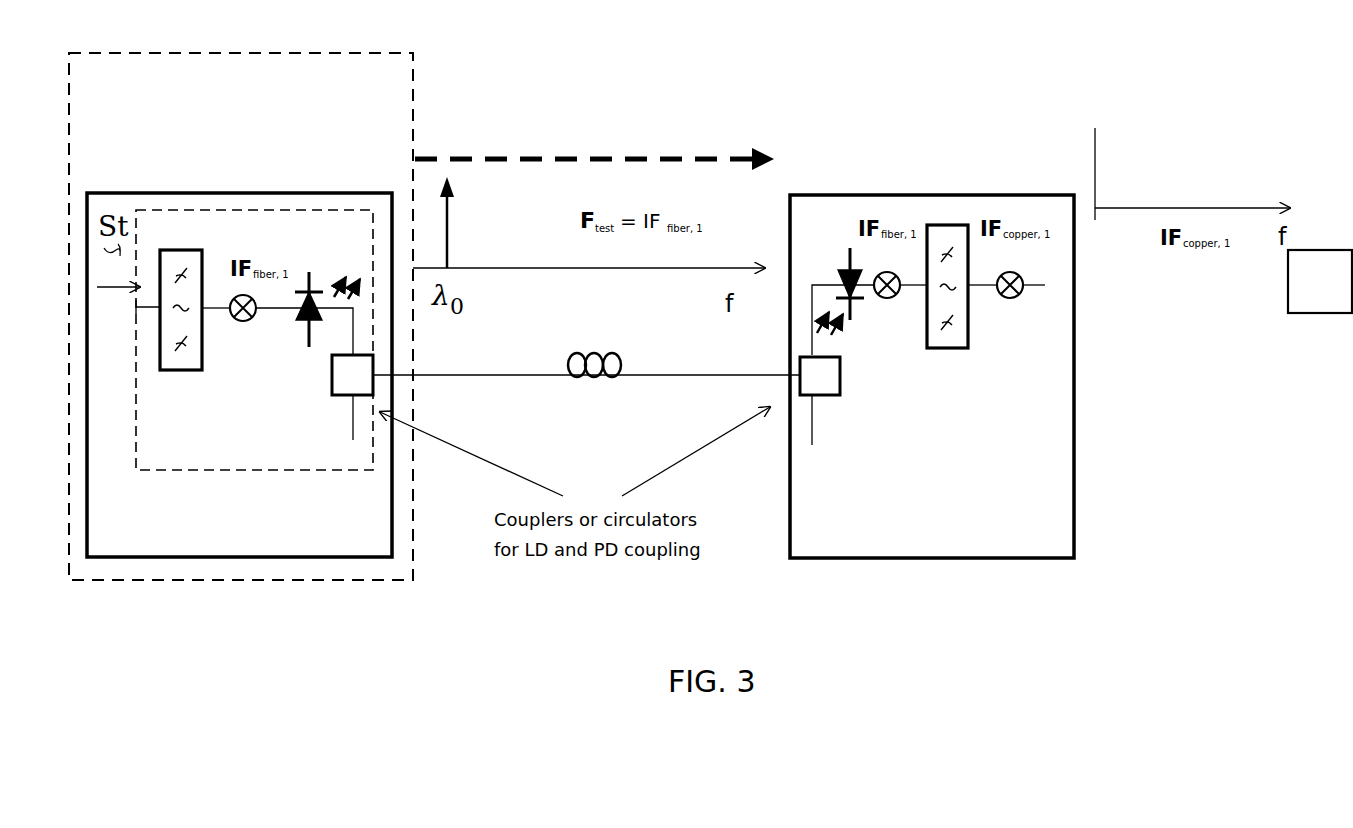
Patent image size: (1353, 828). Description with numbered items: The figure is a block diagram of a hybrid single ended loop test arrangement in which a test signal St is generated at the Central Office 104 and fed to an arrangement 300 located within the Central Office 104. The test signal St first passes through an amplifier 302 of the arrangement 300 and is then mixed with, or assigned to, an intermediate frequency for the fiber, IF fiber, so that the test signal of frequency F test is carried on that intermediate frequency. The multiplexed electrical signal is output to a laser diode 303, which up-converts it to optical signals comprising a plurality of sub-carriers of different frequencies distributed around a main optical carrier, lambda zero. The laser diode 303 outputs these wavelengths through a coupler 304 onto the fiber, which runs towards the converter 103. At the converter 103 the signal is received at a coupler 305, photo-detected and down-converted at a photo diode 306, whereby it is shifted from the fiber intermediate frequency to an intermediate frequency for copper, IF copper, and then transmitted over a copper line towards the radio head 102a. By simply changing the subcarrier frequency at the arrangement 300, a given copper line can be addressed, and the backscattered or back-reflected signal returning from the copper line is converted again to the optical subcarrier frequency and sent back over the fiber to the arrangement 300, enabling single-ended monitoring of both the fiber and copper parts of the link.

The Central Office 104 is at (241, 316).
The arrangement 300 is at (240, 465).
The amplifier 302 is at (189, 371).
The laser diode 303 is at (305, 287).
The coupler 304 is at (331, 386).
The coupler 305 is at (834, 396).
The photo diode 306 is at (846, 275).
The converter 103 is at (1070, 470).
The radio head 102a is at (1325, 304).